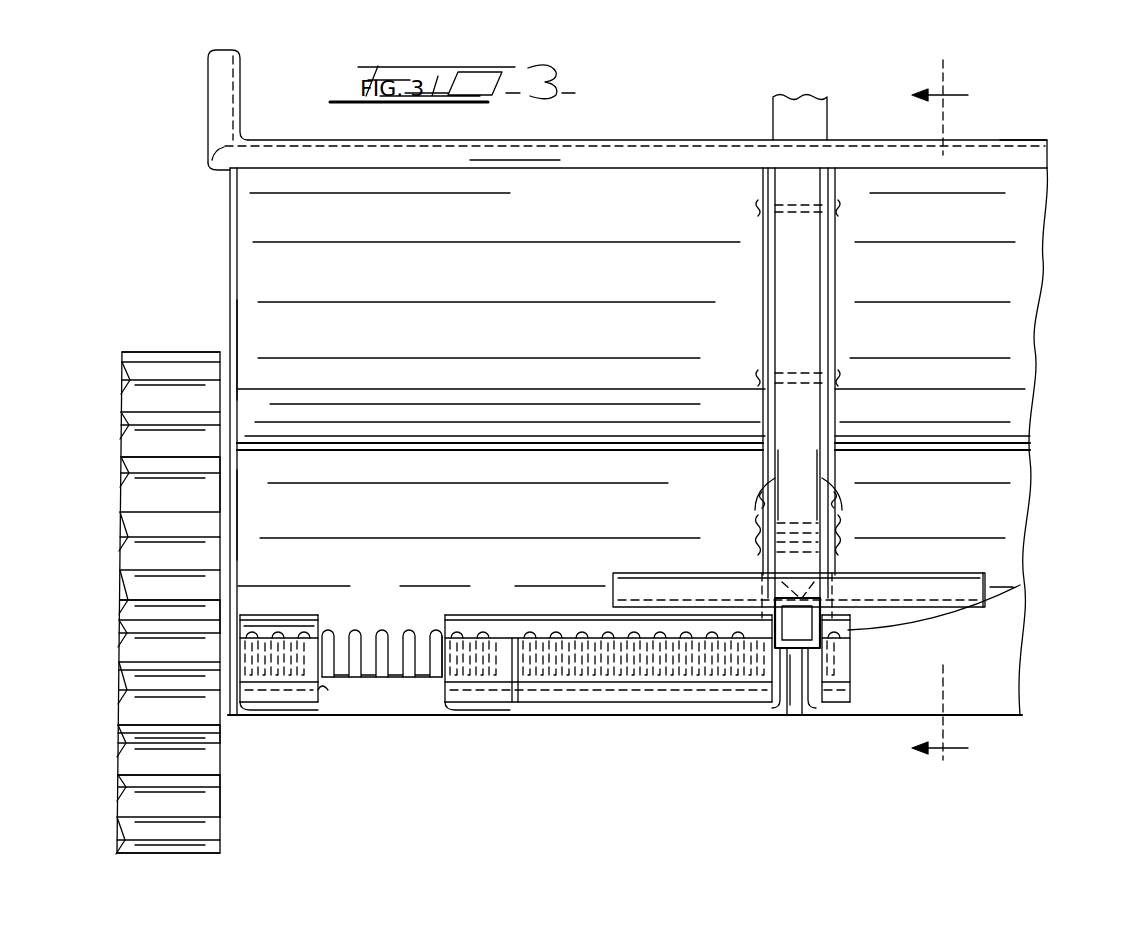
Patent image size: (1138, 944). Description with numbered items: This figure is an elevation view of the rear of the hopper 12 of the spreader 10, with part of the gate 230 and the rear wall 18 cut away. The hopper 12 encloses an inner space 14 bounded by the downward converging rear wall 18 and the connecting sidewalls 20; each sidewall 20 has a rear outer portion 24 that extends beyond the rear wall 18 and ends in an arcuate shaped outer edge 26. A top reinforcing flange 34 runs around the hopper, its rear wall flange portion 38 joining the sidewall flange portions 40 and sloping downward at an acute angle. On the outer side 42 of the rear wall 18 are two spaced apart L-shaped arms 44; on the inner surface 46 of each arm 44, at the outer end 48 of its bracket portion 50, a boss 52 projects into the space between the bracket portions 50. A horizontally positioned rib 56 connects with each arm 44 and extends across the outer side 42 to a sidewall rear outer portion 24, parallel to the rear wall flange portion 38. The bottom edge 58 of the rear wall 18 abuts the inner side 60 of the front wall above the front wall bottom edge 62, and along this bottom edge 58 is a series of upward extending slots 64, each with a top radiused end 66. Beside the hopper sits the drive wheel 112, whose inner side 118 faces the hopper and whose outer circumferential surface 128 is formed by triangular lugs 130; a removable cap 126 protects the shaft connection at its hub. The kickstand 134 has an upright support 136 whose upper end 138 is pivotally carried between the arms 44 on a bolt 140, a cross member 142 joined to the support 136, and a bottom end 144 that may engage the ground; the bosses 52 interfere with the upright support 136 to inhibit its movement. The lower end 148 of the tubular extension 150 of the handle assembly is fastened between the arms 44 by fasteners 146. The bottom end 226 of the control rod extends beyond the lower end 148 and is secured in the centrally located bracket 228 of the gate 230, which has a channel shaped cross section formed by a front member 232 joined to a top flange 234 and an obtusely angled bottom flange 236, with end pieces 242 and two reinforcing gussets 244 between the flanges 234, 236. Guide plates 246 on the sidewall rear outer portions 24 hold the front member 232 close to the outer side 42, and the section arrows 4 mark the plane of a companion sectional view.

The section line 4- 4 is at (940, 421).
The spreader 10 is at (1064, 152).
The hopper 12 is at (250, 263).
The inner space 14 is at (610, 152).
The rear wall 18 is at (1040, 268).
The sidewall 20 is at (232, 190).
The rear outer portion 24 is at (237, 348).
The arcuate shaped outer edge 26 is at (232, 512).
The top reinforcing flange 34 is at (276, 150).
The rear wall flange portion 38 is at (512, 166).
The sidewall flange portion 40 is at (214, 82).
The outer side 42 is at (702, 277).
The L-shaped arm 44 is at (766, 342).
The inner surface 46 is at (760, 500).
The outer end 48 is at (776, 618).
The bracket portion 50 is at (770, 568).
The boss 52 is at (796, 575).
The horizontally positioned rib 56 is at (430, 408).
The bottom edge 58 is at (394, 680).
The inner side 60 is at (1008, 660).
The bottom edge 62 is at (803, 658).
The slot 64 is at (405, 645).
The top radiused end 66 is at (545, 640).
The wheel 112 is at (166, 368).
The inner side 118 is at (222, 796).
The removable cap 126 is at (122, 612).
The outer circumferential surface 128 is at (122, 738).
The lugs or teeth 130 is at (125, 480).
The kickstand 134 is at (776, 486).
The upright support 136 is at (828, 556).
The upper end 138 is at (832, 482).
The bolt 140 is at (762, 548).
The cross member 142 is at (652, 590).
The bottom end 144 is at (778, 656).
The fasteners 146 is at (762, 208).
The lower end 148 is at (805, 436).
The tubular extension 150 is at (822, 120).
The bottom end 226 is at (794, 690).
The bracket 228 is at (818, 665).
The gate 230 is at (567, 625).
The front member 232 is at (320, 686).
The top flange 234 is at (265, 632).
The bottom flange 236 is at (572, 700).
The end pieces 242 is at (244, 672).
The reinforcing gussets 244 is at (526, 690).
The guide plates 246 is at (238, 618).